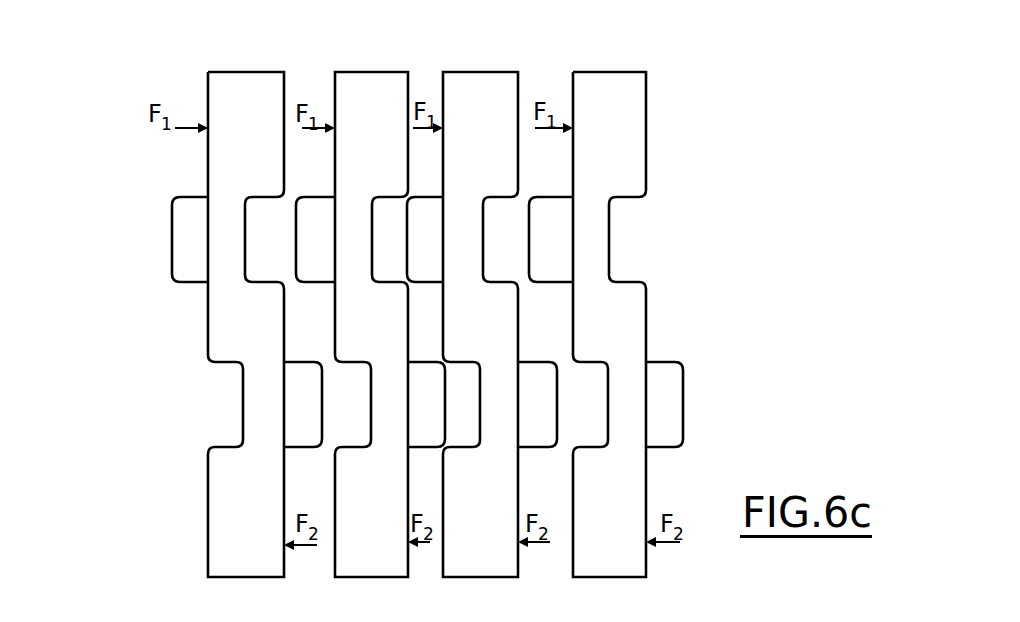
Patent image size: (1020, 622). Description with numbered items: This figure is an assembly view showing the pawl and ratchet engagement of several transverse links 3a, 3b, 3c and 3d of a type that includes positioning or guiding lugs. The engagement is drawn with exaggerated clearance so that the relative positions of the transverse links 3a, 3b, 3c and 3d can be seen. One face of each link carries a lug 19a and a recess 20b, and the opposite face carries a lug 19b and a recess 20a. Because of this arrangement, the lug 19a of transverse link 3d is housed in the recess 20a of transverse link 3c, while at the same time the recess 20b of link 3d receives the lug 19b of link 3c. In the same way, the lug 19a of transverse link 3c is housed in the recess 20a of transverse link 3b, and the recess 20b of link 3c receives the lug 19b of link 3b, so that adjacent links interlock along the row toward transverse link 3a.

The transverse link 3a is at (240, 86).
The transverse link 3b is at (370, 86).
The transverse link 3c is at (485, 88).
The transverse link 3d is at (610, 88).
The lug 19a is at (187, 242).
The lug 19b is at (303, 413).
The recess 20a is at (264, 247).
The recess 20b is at (220, 402).